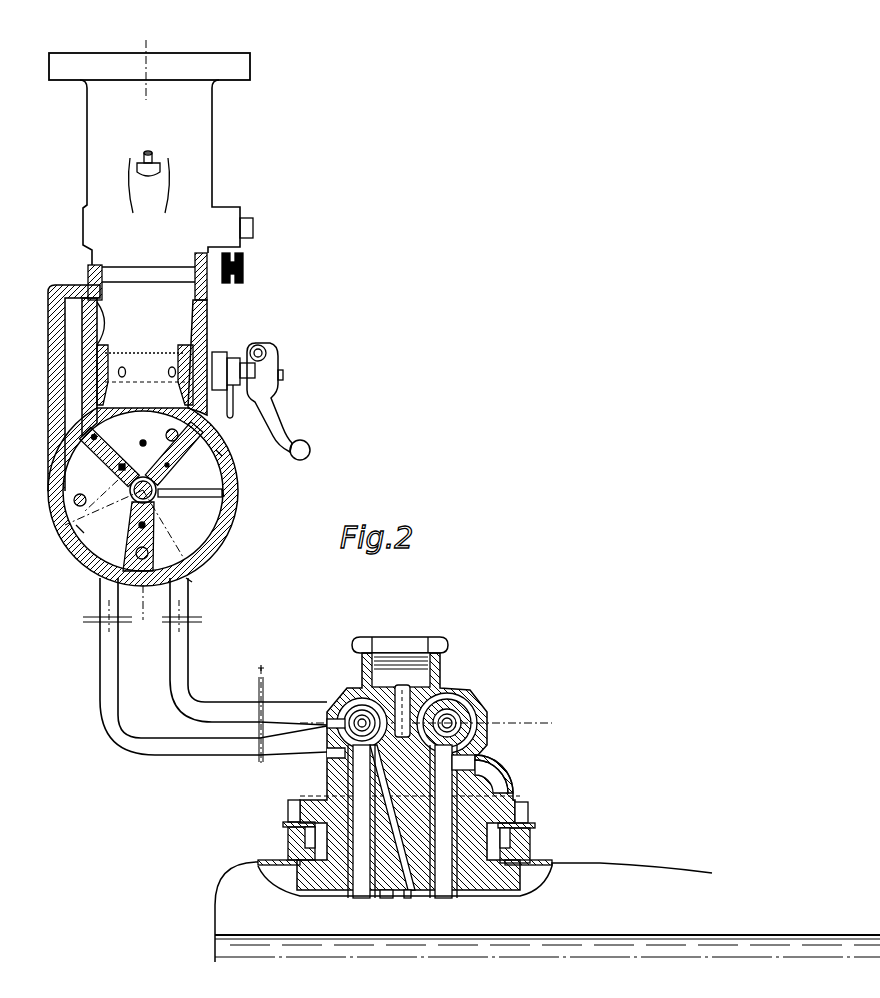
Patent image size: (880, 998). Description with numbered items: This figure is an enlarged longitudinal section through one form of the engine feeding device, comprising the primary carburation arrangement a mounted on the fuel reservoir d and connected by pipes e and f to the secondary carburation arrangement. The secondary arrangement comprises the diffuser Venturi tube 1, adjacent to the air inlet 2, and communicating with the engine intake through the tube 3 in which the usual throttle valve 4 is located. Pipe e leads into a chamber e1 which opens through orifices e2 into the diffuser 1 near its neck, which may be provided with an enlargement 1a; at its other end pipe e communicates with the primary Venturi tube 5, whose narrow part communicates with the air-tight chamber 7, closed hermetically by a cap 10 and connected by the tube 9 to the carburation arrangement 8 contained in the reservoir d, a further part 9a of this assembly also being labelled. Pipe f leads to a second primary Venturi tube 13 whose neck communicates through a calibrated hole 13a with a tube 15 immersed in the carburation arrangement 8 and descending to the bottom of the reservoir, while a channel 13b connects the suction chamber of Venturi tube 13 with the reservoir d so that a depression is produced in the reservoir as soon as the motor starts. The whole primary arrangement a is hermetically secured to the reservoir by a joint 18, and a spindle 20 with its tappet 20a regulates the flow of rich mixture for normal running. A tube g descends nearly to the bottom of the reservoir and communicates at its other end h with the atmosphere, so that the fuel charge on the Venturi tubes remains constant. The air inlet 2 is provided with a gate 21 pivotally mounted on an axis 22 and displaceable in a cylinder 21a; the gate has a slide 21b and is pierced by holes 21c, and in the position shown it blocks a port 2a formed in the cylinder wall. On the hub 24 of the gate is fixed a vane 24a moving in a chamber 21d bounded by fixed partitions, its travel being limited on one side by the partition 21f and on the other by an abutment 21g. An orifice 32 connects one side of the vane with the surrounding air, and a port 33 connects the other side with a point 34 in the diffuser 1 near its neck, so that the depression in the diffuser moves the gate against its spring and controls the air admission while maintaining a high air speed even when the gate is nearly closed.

The diffuser Venturi tube 1 is at (204, 322).
The enlargement 1a is at (120, 356).
The air inlet 2 is at (213, 418).
The port 2a is at (232, 478).
The tube 3 is at (223, 134).
The throttle valve 4 is at (232, 218).
The primary Venturi tube 5 is at (323, 725).
The chamber 7 is at (406, 683).
The carburation arrangement 8 is at (585, 935).
The tube 9 is at (405, 896).
The threaded neck 9a is at (404, 690).
The cap 10 is at (410, 628).
The second primary Venturi tube 13 is at (360, 716).
The calibrated hole 13a is at (327, 750).
The channel 13b is at (327, 763).
The tube 15 is at (366, 888).
The joint 18 is at (533, 832).
The spindle 20 is at (248, 370).
The tappet 20a is at (233, 406).
The gate 21 is at (168, 475).
The cylinder 21a is at (236, 500).
The slide 21b is at (217, 454).
The holes 21c is at (102, 455).
The chamber 21d is at (80, 530).
The partition 21f is at (190, 580).
The abutment 21g is at (92, 489).
The axis 22 is at (157, 502).
The hub 24 is at (132, 490).
The vane 24a is at (130, 515).
The orifice 32 is at (115, 590).
The port 33 is at (81, 367).
The point in the diffuser 34 is at (104, 310).
The primary carburation arrangement a is at (482, 774).
The fuel reservoir d is at (463, 911).
The pipe e is at (174, 357).
The chamber e1 is at (210, 352).
The orifices e2 is at (123, 378).
The pipe f is at (112, 668).
The tube g is at (463, 920).
The end of tube g h is at (500, 784).